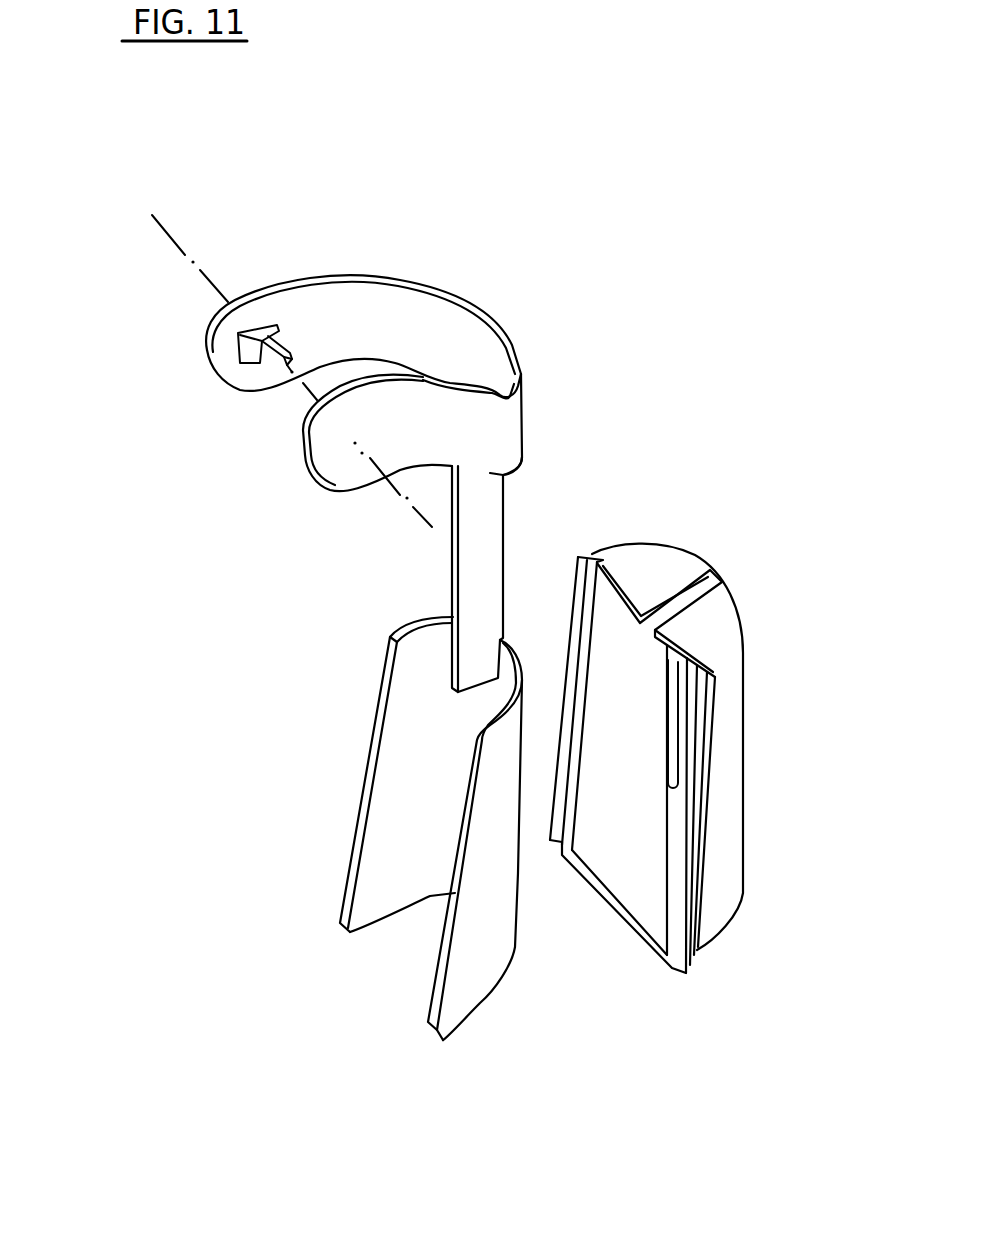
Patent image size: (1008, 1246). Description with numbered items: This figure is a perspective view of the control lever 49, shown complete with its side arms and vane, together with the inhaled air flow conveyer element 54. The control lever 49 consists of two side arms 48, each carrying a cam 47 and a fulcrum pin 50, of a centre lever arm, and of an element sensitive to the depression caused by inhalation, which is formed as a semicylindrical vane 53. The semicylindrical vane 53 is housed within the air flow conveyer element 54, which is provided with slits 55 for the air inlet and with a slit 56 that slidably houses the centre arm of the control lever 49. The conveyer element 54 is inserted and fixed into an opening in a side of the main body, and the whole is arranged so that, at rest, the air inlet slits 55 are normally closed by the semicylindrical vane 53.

The cam 47 is at (250, 350).
The side arm 48 is at (397, 428).
The control lever 49 is at (477, 552).
The fulcrum pin 50 is at (278, 340).
The semicylindrical vane 53 is at (463, 968).
The air flow conveyer element 54 is at (727, 830).
The slit 55 is at (672, 760).
The slit 56 is at (672, 598).